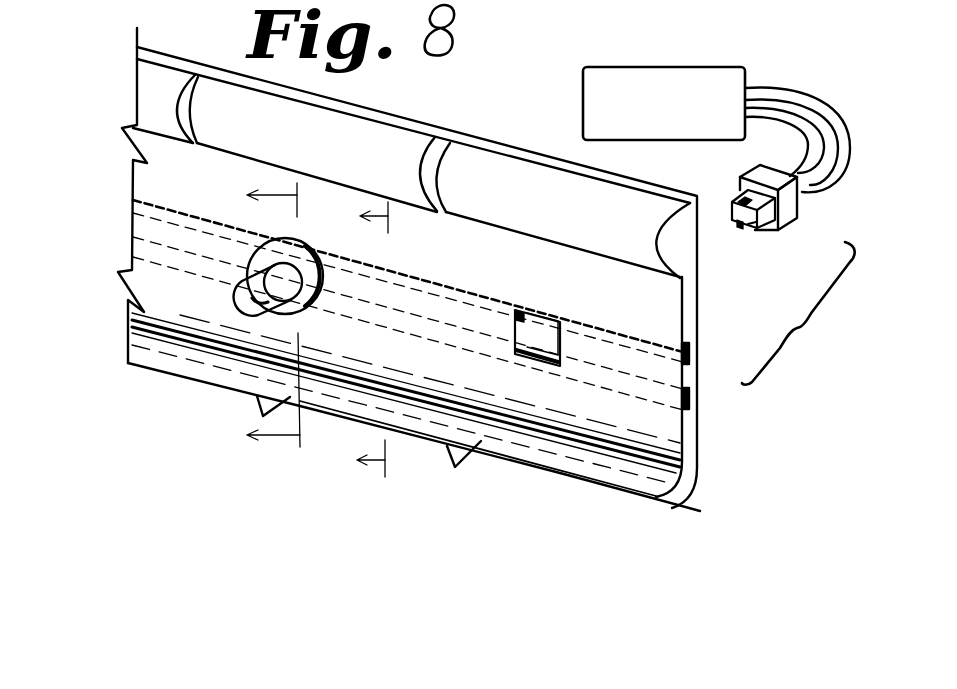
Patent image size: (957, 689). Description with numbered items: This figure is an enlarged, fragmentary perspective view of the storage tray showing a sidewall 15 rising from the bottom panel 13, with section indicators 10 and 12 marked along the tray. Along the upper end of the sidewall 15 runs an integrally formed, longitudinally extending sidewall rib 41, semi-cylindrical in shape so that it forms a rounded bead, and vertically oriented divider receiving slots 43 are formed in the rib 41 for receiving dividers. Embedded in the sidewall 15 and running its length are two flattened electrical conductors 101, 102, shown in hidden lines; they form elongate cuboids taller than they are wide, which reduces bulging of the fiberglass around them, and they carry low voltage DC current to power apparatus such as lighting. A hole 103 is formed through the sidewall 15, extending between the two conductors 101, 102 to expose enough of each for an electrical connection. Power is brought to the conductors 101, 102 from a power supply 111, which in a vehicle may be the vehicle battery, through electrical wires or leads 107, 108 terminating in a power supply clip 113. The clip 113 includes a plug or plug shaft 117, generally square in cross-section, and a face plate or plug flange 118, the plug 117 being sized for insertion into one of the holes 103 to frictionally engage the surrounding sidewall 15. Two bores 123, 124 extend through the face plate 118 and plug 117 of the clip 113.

The section line 10 is at (355, 339).
The section line 12 is at (258, 311).
The bottom panel 13 is at (414, 437).
The sidewall 15 is at (360, 387).
The sidewall rib 41 is at (310, 143).
The divider receiving slot 43 is at (563, 183).
The electrical conductor 101 is at (372, 252).
The electrical conductor 102 is at (361, 311).
The hole 103 is at (551, 310).
The electrical wire or lead 107 is at (751, 179).
The electrical wire or lead 108 is at (832, 213).
The power supply 111 is at (664, 85).
The power supply clip 113 is at (832, 192).
The plug or plug shaft 117 is at (775, 256).
The face plate or plug flange 118 is at (838, 203).
The bore 123 is at (712, 188).
The bore 124 is at (727, 253).